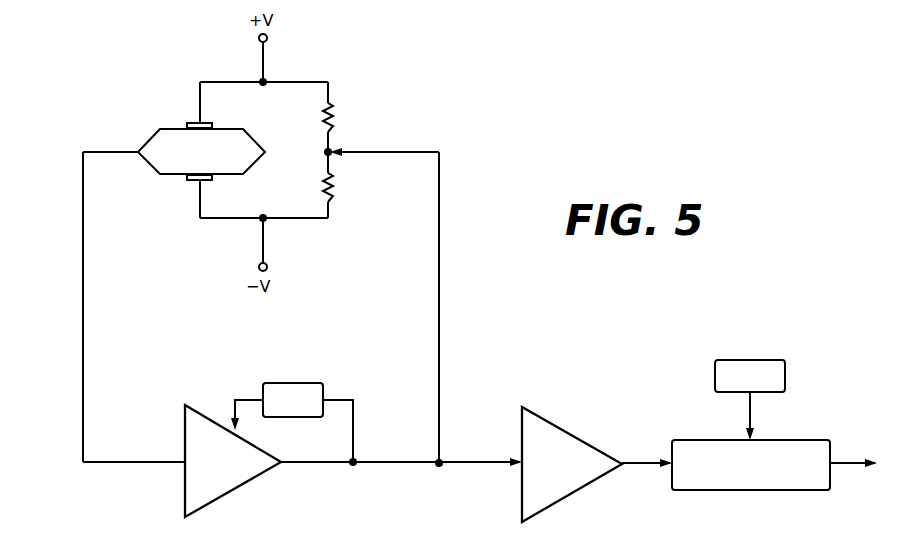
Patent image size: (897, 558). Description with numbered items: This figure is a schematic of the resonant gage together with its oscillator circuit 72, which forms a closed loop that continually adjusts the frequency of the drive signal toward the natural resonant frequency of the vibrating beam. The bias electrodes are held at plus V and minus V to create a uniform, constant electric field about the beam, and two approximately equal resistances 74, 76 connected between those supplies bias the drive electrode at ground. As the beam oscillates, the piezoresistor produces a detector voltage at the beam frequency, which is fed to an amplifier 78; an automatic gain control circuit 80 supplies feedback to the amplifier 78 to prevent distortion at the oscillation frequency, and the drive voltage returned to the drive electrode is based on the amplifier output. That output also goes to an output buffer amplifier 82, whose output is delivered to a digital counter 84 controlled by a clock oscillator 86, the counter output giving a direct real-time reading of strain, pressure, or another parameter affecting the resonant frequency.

The oscillator circuit 72 is at (82, 106).
The resistance 74 is at (332, 115).
The resistance 76 is at (332, 177).
The amplifier 78 is at (185, 430).
The automatic gain control circuit 80 is at (305, 383).
The output buffer amplifier 82 is at (585, 438).
The digital counter 84 is at (785, 490).
The clock oscillator 86 is at (762, 360).